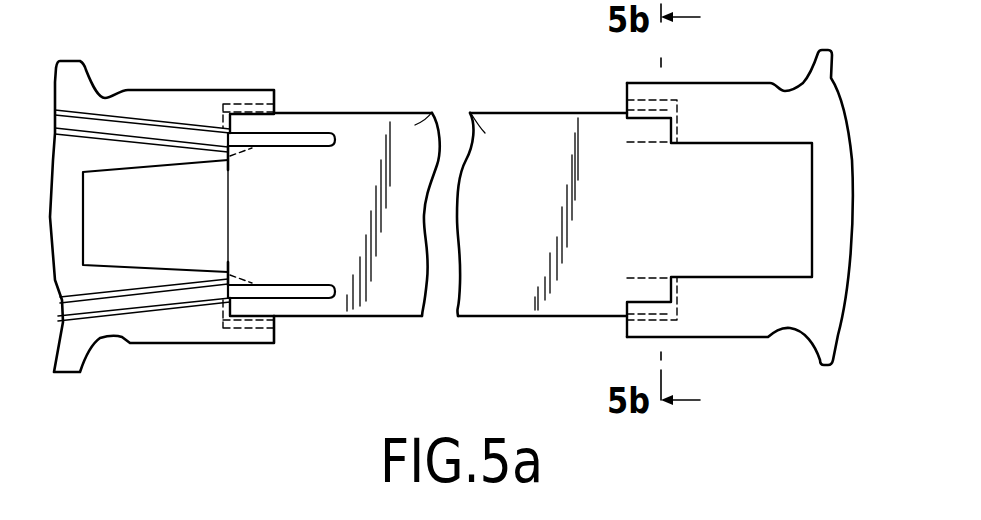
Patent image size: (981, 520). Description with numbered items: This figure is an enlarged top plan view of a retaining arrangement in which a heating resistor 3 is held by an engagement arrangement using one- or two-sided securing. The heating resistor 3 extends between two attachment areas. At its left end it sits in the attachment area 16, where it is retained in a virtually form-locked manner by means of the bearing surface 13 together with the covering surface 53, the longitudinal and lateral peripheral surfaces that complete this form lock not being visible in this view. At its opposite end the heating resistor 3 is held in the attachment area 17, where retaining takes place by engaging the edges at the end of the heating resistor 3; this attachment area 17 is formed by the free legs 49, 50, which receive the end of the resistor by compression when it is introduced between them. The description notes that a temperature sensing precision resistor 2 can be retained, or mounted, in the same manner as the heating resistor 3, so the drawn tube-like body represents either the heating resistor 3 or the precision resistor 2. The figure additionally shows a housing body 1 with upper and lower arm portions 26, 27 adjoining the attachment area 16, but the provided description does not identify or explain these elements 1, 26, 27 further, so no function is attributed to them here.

The first connector housing 1 is at (66, 62).
The temperature sensing precision resistor 2 is at (470, 112).
The heating resistor 3 is at (450, 168).
The bearing surface 13 is at (282, 105).
The attachment area 16 is at (284, 347).
The attachment area 17 is at (618, 97).
The lower resilient spring arm 26 is at (142, 307).
The upper resilient spring arm 27 is at (147, 128).
The free leg 49 is at (643, 83).
The free leg 50 is at (640, 338).
The covering surface 53 is at (247, 117).